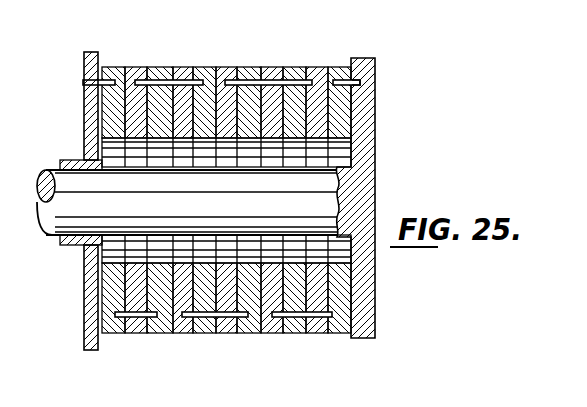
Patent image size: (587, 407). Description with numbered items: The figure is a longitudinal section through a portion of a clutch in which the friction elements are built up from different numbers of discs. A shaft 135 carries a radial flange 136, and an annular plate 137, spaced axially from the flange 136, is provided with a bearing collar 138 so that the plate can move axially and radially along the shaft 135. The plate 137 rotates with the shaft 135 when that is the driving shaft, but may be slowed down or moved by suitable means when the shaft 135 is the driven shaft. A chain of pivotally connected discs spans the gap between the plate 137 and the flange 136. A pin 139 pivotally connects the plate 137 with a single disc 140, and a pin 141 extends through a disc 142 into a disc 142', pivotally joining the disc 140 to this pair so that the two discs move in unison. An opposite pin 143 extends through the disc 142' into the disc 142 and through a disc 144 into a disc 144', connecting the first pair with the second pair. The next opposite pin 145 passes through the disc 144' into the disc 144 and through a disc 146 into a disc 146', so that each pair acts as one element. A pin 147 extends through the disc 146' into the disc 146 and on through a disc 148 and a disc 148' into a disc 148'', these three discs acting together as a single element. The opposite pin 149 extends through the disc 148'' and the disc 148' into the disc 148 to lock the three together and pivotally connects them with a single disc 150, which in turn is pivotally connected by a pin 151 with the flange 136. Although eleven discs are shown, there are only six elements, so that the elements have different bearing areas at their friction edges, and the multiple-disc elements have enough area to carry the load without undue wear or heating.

The shaft 135 is at (226, 213).
The radial flange 136 is at (368, 136).
The annular plate 137 is at (88, 100).
The bearing collar 138 is at (73, 160).
The pin 139 is at (92, 81).
The single disc 140 is at (112, 66).
The pin 141 is at (118, 333).
The disc 142 is at (135, 340).
The disc 142' is at (156, 325).
The pin 143 is at (165, 80).
The disc 144 is at (193, 83).
The disc 144' is at (268, 56).
The pin 145 is at (216, 318).
The disc 146 is at (215, 344).
The disc 146' is at (263, 314).
The pin 147 is at (278, 67).
The disc 148 is at (305, 80).
The disc 148' is at (334, 60).
The disc 148'' is at (372, 81).
The pin 149 is at (314, 318).
The single disc 150 is at (338, 325).
The pin 151 is at (358, 84).